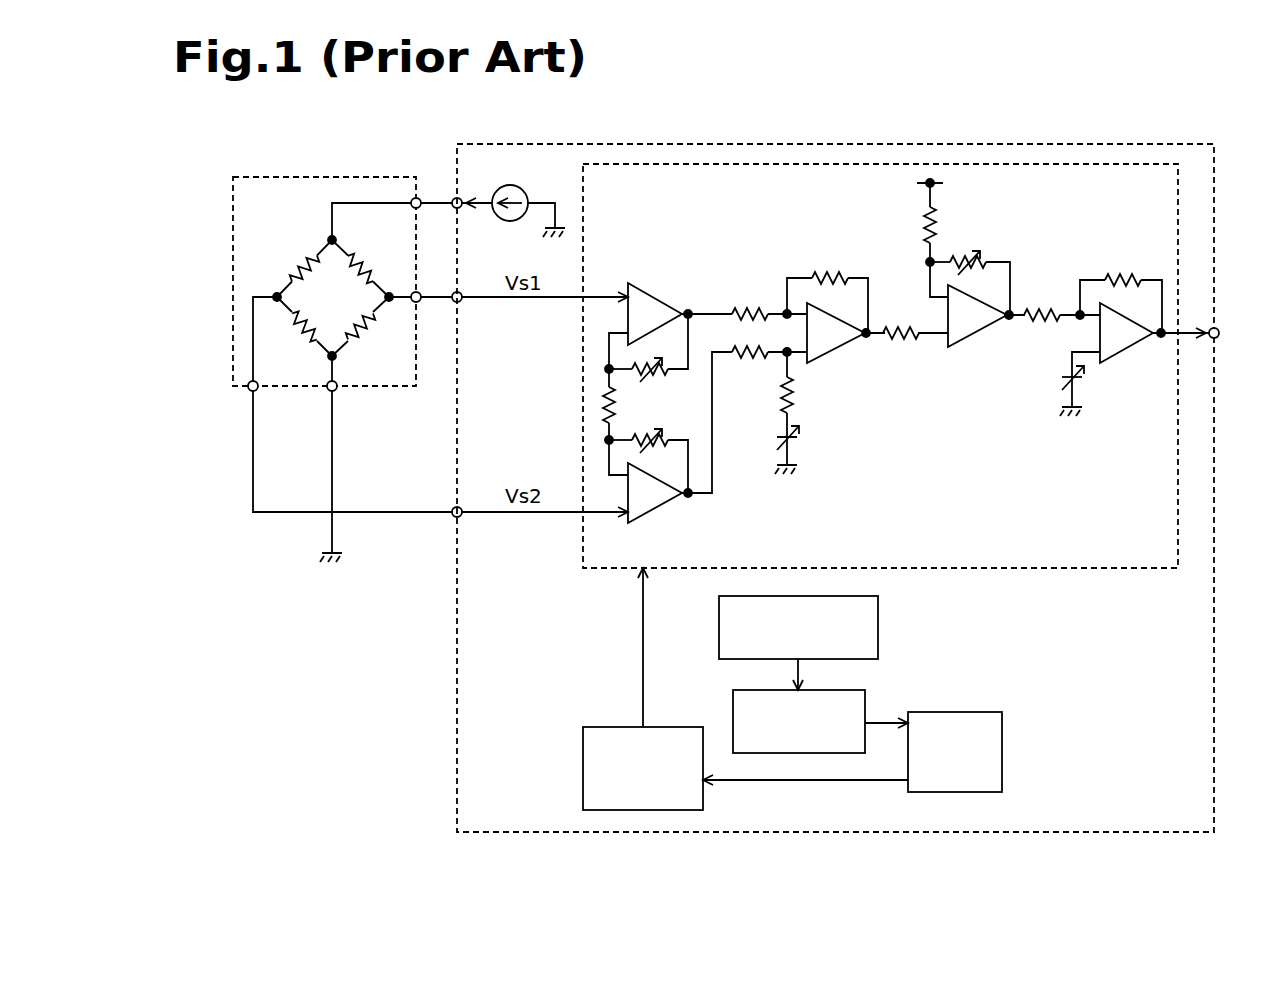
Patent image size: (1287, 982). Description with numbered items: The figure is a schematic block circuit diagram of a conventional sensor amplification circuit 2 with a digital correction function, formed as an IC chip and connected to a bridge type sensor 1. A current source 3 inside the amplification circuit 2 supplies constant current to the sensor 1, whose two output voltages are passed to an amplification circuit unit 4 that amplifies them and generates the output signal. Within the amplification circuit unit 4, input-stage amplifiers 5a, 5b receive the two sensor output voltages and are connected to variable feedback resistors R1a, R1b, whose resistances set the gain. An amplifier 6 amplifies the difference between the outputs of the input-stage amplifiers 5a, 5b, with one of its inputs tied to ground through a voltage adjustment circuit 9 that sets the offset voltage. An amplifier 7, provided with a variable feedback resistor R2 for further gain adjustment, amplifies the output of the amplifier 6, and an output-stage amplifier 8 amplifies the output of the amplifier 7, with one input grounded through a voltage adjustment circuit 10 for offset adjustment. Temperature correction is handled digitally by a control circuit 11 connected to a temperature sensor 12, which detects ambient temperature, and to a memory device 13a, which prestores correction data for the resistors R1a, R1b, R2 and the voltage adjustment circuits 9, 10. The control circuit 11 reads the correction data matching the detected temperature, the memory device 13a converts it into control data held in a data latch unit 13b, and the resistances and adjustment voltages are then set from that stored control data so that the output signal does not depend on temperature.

The bridge type sensor 1 is at (258, 174).
The sensor amplification circuit 2 is at (1220, 162).
The current source 3 is at (518, 190).
The amplification circuit unit 4 is at (1103, 568).
The input-stage amplifier 5a is at (645, 290).
The input-stage amplifier 5b is at (646, 518).
The amplifier 6 is at (833, 353).
The amplifier 7 is at (970, 338).
The output-stage amplifier 8 is at (1120, 358).
The voltage adjustment circuit 9 is at (803, 428).
The voltage adjustment circuit 10 is at (1062, 374).
The control circuit 11 is at (746, 690).
The temperature sensor 12 is at (878, 606).
The memory device 13a is at (985, 712).
The data latch unit 13b is at (605, 727).
The feedback resistor R1a is at (650, 428).
The feedback resistor R1b is at (656, 380).
The feedback resistor R2 is at (976, 255).